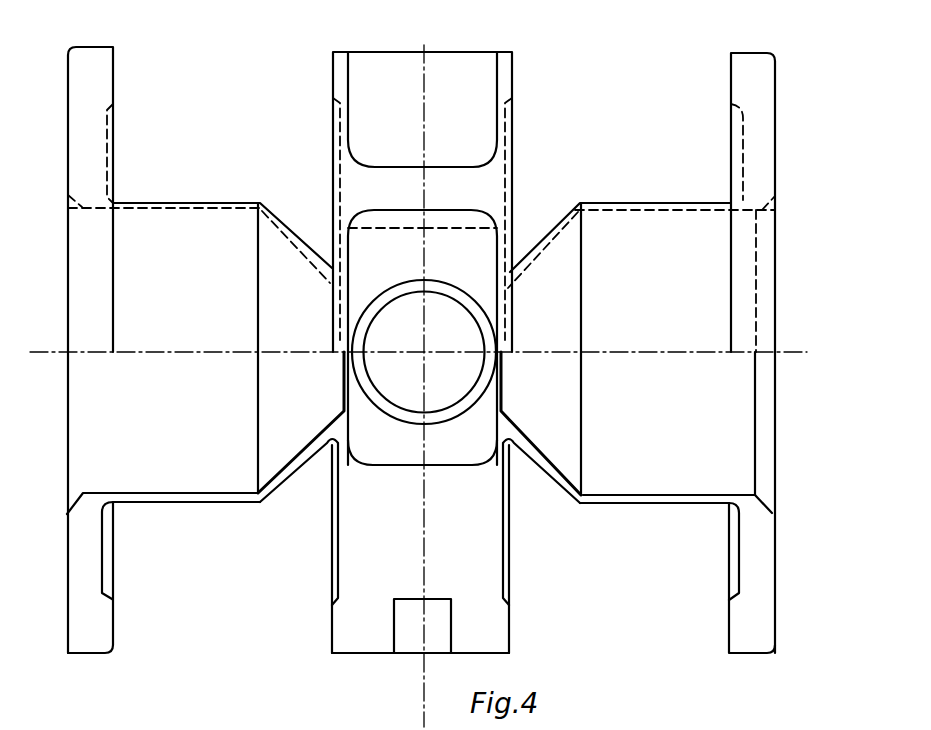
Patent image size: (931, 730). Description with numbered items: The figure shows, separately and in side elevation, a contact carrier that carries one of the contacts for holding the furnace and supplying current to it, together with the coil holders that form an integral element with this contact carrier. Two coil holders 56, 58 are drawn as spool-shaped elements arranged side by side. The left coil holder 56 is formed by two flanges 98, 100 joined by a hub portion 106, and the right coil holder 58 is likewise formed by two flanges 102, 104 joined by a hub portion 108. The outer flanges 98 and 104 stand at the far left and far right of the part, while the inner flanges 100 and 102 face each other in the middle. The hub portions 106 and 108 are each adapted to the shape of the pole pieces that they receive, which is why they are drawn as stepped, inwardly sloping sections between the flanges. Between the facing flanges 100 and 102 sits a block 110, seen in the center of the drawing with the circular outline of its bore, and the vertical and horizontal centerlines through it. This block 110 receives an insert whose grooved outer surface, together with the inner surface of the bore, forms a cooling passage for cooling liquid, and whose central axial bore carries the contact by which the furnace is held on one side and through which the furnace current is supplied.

The flange 98 is at (97, 60).
The flange 100 is at (337, 50).
The flange 102 is at (505, 52).
The flange 104 is at (758, 72).
The hub portion 106 is at (187, 200).
The hub portion 108 is at (640, 202).
The coil holder 56 is at (193, 597).
The coil holder 58 is at (623, 587).
The block 110 is at (352, 618).